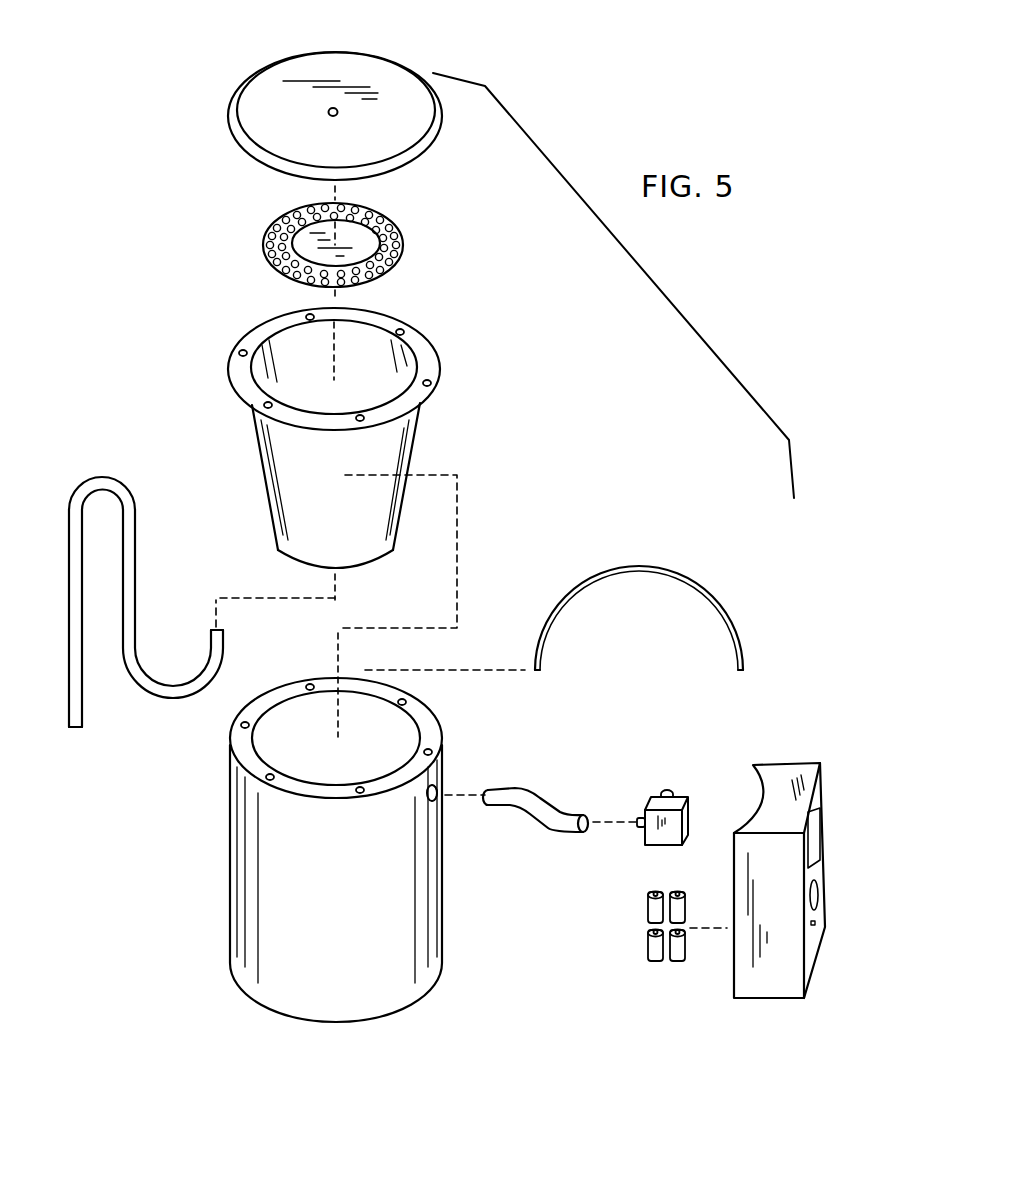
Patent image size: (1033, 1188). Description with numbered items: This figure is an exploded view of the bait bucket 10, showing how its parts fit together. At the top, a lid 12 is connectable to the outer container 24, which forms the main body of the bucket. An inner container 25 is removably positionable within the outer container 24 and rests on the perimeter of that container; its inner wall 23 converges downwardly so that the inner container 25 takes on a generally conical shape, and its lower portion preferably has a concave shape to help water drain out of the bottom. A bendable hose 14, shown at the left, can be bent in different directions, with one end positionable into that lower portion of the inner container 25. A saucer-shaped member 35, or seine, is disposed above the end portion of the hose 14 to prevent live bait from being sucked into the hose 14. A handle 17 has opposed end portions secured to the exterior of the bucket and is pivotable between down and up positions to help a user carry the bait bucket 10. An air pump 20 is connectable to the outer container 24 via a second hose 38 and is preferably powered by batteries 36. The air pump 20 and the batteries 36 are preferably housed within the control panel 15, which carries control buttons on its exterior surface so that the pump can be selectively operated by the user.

The bait bucket 10 is at (585, 155).
The lid 12 is at (380, 61).
The saucer-shaped member 35 is at (405, 248).
The inner container 25 is at (330, 476).
The inner wall 23 is at (397, 535).
The hose 14 is at (132, 547).
The handle 17 is at (665, 572).
The outer container 24 is at (356, 879).
The hose 38 is at (532, 802).
The air pump 20 is at (685, 793).
The control panel 15 is at (798, 765).
The batteries 36 is at (642, 897).